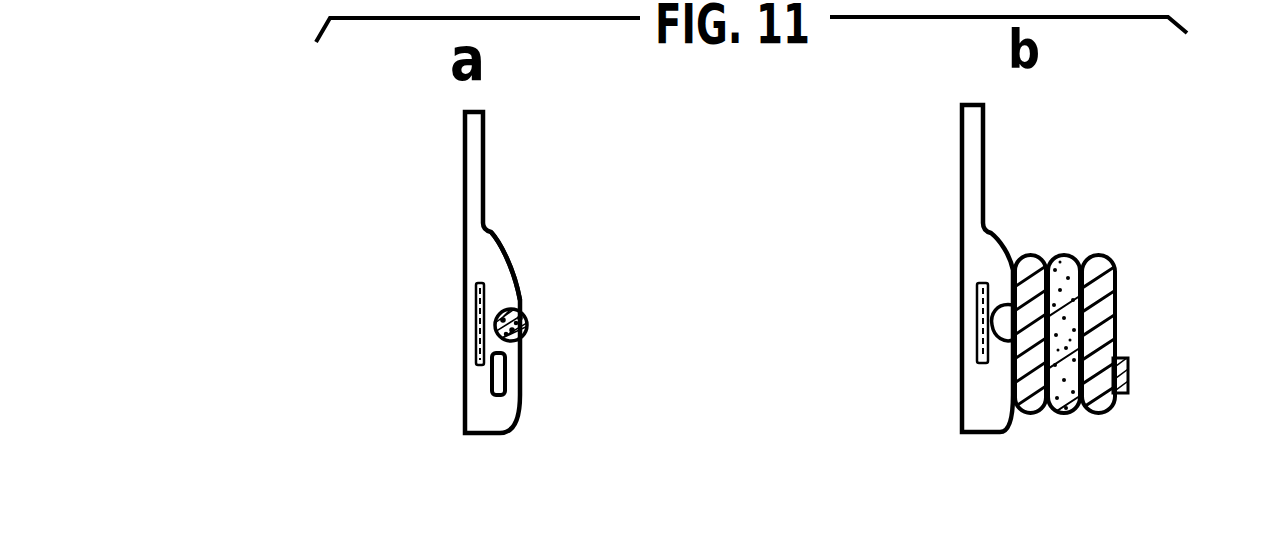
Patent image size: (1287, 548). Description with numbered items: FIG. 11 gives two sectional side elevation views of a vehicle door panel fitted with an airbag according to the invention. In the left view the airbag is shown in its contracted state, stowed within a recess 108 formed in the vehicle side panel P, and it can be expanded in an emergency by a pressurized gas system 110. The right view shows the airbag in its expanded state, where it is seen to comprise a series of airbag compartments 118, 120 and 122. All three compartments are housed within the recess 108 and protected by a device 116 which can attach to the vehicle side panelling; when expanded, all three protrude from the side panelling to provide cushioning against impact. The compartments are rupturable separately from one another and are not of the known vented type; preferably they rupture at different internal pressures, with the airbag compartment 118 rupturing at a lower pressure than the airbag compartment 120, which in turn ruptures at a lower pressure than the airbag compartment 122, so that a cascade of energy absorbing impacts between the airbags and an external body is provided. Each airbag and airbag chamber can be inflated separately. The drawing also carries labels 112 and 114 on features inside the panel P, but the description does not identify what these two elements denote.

The vehicle side panel P is at (448, 150).
The recess 108 is at (521, 305).
The pressurized gas system 110 is at (503, 378).
The adhesive strip 112 is at (481, 283).
The rolled edge 114 is at (1000, 304).
The device 116 is at (528, 321).
The airbag compartment 118 is at (1098, 412).
The airbag compartment 120 is at (1065, 253).
The airbag compartment 122 is at (1028, 253).